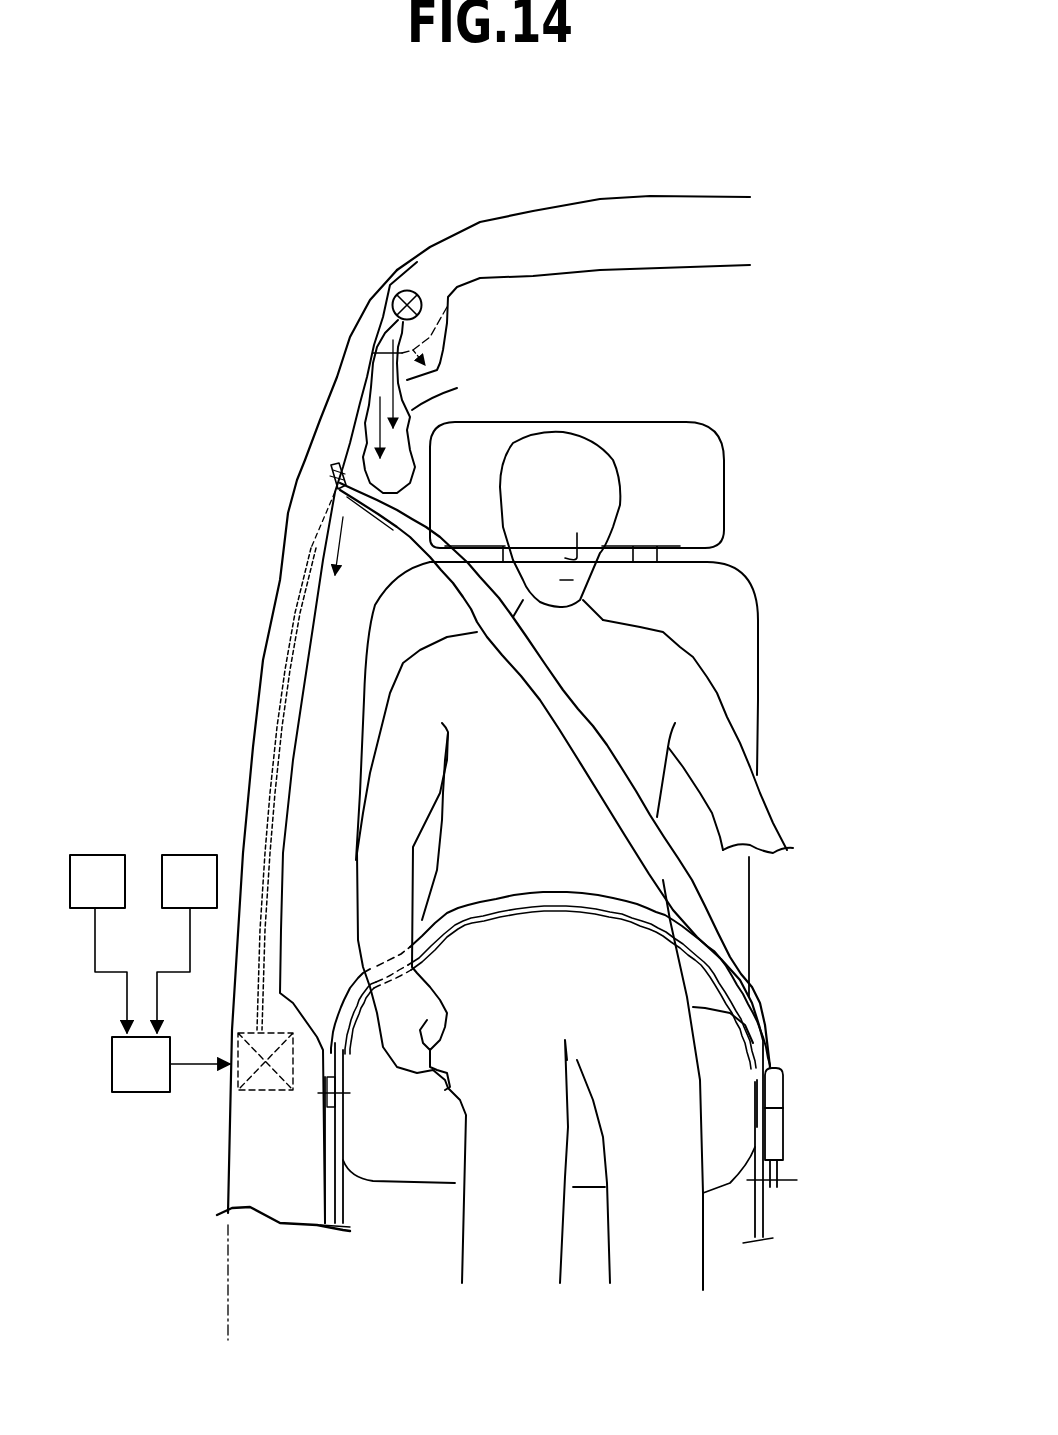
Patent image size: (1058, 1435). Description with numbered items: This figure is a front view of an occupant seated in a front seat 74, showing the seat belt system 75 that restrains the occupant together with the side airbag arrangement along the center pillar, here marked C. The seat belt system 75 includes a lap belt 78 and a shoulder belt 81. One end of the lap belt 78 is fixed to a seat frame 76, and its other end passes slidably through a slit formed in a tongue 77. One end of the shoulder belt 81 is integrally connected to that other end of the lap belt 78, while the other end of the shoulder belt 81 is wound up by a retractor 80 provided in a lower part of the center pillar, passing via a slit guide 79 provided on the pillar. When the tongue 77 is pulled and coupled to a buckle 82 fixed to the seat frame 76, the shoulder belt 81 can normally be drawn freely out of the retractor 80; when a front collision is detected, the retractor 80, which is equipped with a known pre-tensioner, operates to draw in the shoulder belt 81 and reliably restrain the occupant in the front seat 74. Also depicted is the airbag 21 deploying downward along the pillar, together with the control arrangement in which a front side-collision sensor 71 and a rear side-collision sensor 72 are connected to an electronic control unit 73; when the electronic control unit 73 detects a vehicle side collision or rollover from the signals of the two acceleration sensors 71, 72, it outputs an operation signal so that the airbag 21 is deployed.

The center pillar C is at (375, 327).
The airbag 21 is at (443, 392).
The front side-collision sensor 71 is at (84, 897).
The rear side-collision sensor 72 is at (177, 897).
The electronic control unit 73 is at (128, 1079).
The front seat 74 is at (750, 682).
The seat belt system 75 is at (550, 776).
The seat frame 76 is at (343, 1195).
The tongue 77 is at (780, 1085).
The lap belt 78 is at (569, 892).
The slit guide 79 is at (333, 470).
The retractor 80 is at (263, 1097).
The shoulder belt 81 is at (556, 692).
The buckle 82 is at (780, 1125).